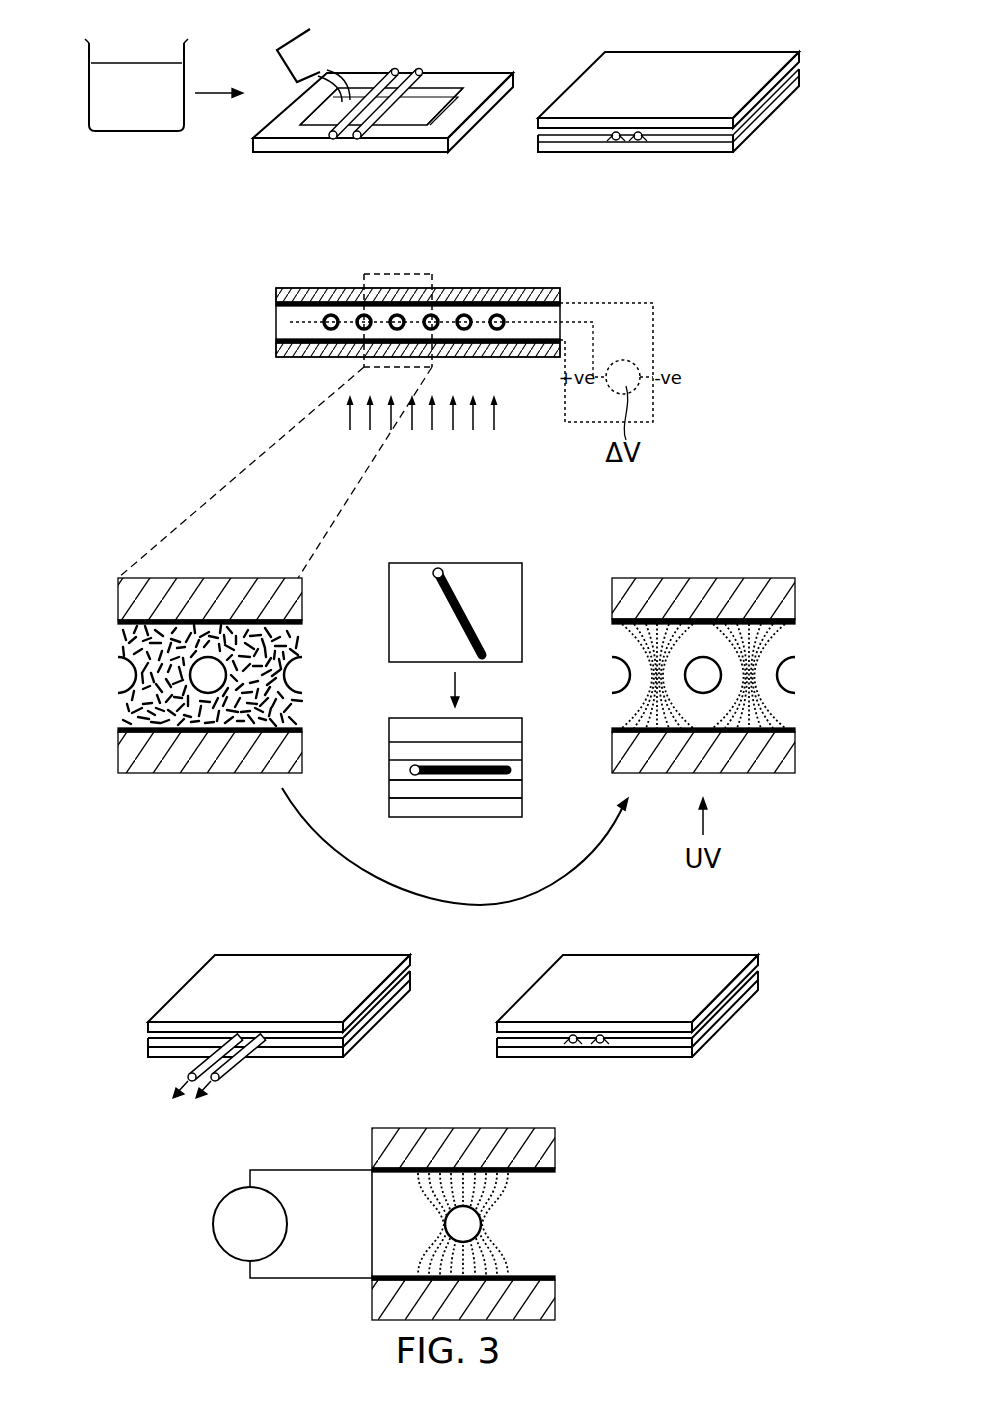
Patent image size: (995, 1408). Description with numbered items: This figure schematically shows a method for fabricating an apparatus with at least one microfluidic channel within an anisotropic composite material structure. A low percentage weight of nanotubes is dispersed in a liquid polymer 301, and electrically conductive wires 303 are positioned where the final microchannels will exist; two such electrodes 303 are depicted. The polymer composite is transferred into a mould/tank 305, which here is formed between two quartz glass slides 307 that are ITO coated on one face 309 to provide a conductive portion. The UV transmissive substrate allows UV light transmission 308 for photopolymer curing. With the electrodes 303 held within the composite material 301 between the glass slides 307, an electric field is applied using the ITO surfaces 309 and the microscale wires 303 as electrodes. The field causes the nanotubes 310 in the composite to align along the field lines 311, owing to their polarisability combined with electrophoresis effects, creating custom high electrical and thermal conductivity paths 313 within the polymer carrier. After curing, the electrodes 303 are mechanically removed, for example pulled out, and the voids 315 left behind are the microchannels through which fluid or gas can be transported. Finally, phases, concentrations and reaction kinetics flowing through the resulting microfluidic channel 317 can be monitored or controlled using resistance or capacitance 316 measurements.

The liquid polymer 301 is at (137, 141).
The electrically conductive wire 303 is at (331, 163).
The mould/tank 305 is at (474, 92).
The glass slides 307 is at (745, 68).
The UV light transmission 308 is at (422, 431).
The ITO coated face 309 is at (276, 340).
The nanotubes 310 is at (492, 764).
The field lines 311 is at (437, 793).
The conductivity paths 313 is at (778, 716).
The voids 315 is at (600, 1044).
The resistance or capacitance measurements 316 is at (292, 1224).
The microfluidic channel 317 is at (466, 1224).